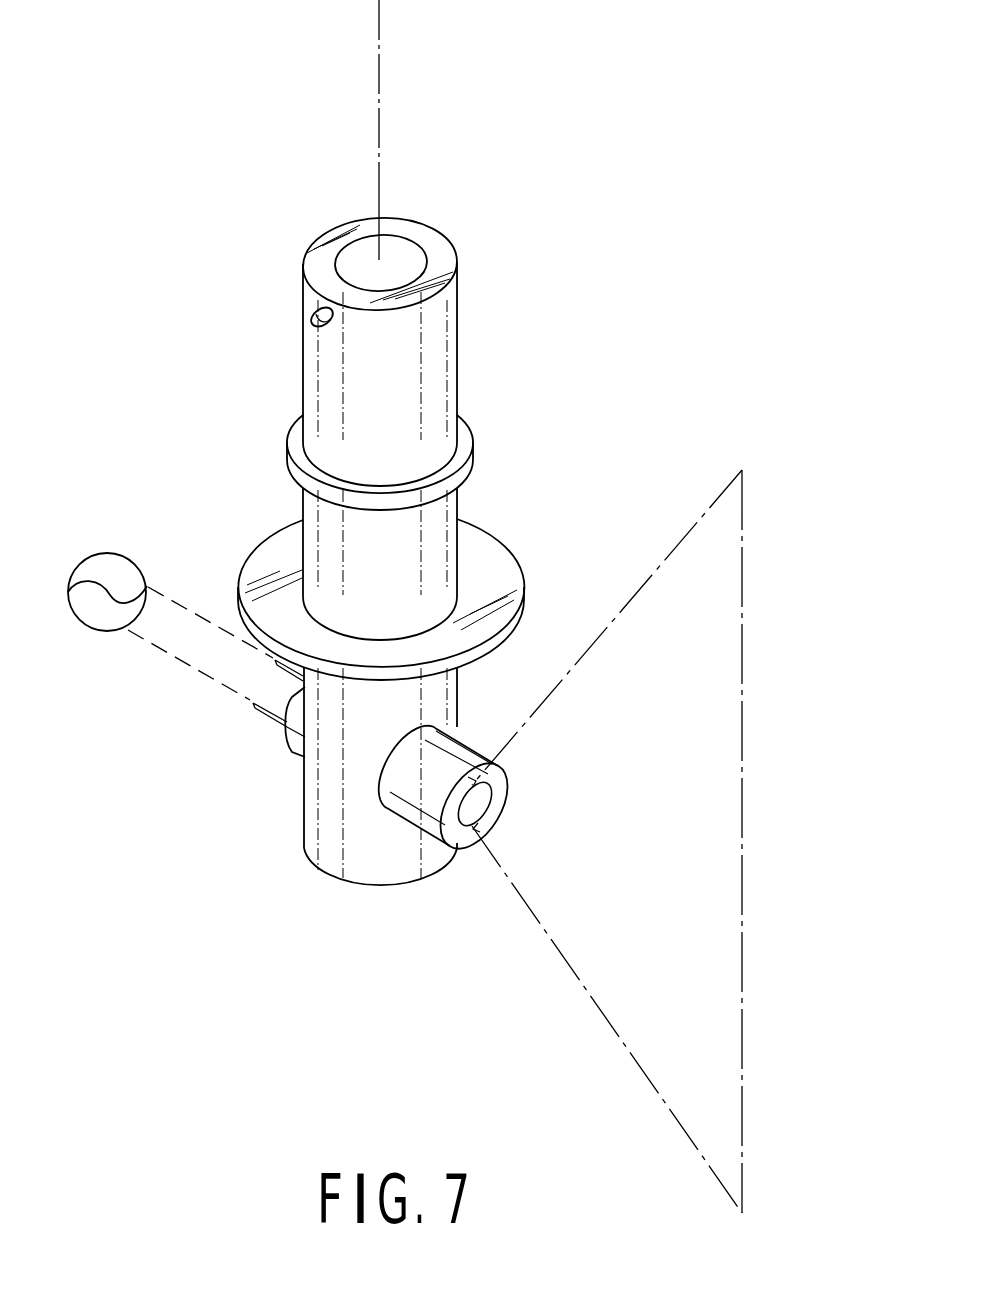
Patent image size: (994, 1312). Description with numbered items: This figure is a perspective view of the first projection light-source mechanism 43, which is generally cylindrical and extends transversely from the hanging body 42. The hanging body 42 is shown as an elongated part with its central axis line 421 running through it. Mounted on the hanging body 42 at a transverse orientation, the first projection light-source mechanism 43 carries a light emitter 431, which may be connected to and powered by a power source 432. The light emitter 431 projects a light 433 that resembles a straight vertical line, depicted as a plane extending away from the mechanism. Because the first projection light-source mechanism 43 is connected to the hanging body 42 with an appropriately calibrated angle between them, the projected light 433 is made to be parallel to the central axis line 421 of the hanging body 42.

The hanging body 42 is at (333, 538).
The central axis line 421 is at (382, 176).
The first projection light-source mechanism 43 is at (417, 804).
The light emitter 431 is at (463, 807).
The power source 432 is at (83, 556).
The light 433 is at (743, 712).